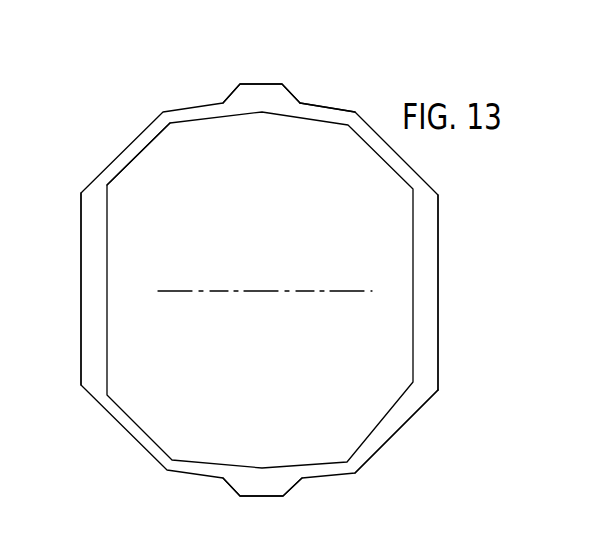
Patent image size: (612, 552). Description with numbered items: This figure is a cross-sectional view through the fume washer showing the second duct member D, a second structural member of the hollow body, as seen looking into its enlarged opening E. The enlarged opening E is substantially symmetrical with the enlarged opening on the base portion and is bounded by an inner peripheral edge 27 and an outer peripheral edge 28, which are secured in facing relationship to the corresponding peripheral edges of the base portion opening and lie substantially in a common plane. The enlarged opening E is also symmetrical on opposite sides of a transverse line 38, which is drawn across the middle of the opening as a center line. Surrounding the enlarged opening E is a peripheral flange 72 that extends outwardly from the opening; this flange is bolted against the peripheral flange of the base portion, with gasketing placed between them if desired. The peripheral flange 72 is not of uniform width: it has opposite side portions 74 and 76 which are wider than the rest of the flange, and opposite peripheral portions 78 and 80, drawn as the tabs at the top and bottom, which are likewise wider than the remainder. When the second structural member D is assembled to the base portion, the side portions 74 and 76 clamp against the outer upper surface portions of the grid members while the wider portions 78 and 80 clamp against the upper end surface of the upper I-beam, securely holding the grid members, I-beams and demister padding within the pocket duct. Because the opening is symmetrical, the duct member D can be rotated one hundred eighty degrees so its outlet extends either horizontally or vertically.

The inner peripheral edge 27 is at (107, 205).
The outer peripheral edge 28 is at (80, 252).
The transverse line 38 is at (212, 292).
The peripheral flange 72 is at (387, 433).
The side portion of peripheral flange 74 is at (90, 367).
The side portion of peripheral flange 76 is at (432, 338).
The peripheral portion of peripheral flange 78 is at (262, 95).
The peripheral portion of peripheral flange 80 is at (270, 488).
The second duct member D is at (333, 106).
The enlarged opening E is at (141, 157).